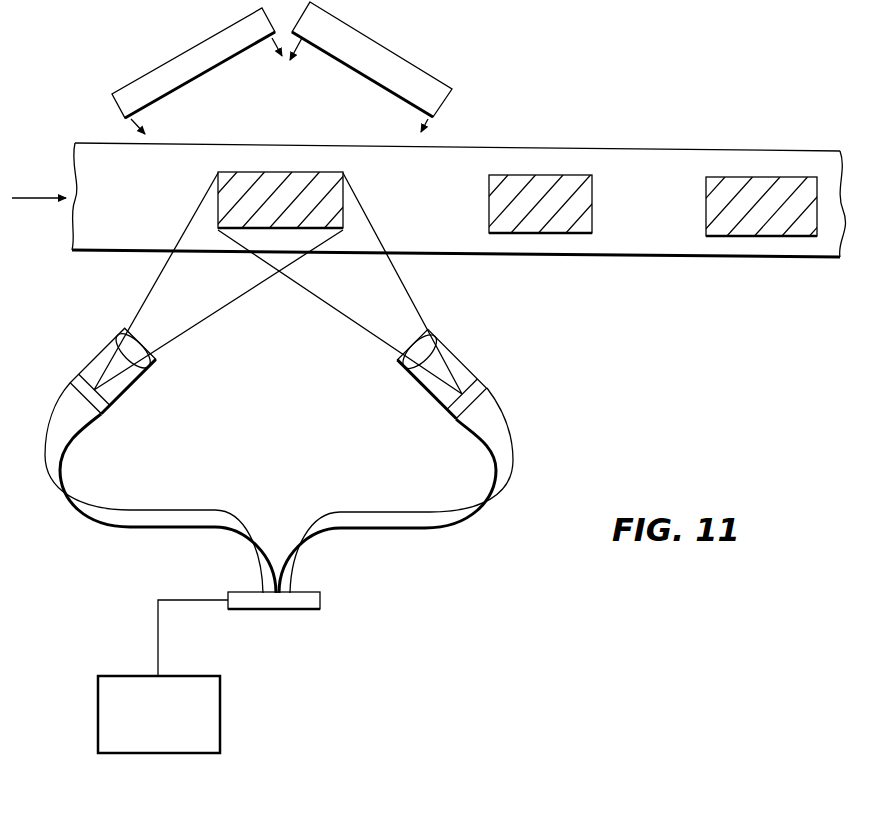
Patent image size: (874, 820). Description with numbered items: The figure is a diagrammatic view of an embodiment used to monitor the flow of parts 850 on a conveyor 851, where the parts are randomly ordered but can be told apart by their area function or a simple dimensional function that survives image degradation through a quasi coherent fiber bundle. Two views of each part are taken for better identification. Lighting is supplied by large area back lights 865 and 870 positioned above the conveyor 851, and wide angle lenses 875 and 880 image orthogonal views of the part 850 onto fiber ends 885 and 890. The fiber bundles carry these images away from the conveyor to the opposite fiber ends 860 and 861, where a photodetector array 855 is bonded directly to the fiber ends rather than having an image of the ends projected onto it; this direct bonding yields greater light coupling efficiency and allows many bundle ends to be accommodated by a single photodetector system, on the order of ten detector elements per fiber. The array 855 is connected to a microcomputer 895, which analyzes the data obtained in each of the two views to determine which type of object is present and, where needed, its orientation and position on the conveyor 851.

The parts 850 is at (343, 173).
The conveyor 851 is at (80, 161).
The array 855 is at (318, 603).
The fiber end 860 is at (262, 590).
The fiber end 861 is at (292, 587).
The large area back light 865 is at (190, 47).
The large area back light 870 is at (393, 54).
The wide angle lens 875 is at (157, 356).
The wide angle lens 880 is at (425, 330).
The fiber end 885 is at (88, 387).
The fiber end 890 is at (485, 383).
The microcomputer 895 is at (180, 727).